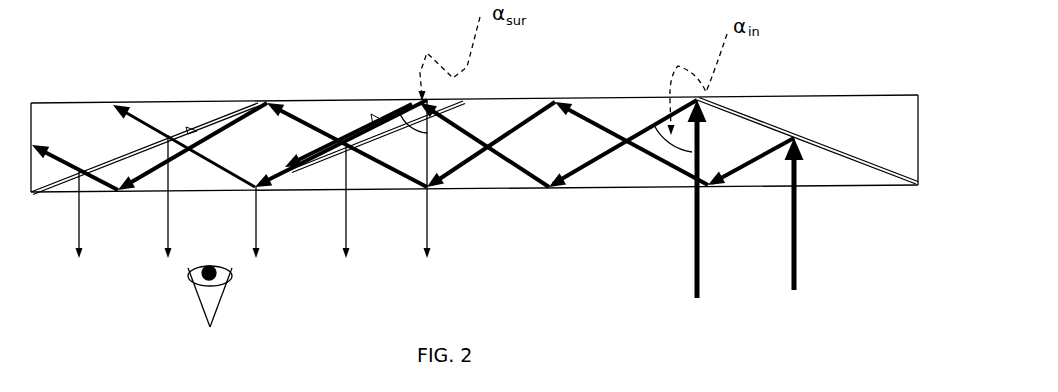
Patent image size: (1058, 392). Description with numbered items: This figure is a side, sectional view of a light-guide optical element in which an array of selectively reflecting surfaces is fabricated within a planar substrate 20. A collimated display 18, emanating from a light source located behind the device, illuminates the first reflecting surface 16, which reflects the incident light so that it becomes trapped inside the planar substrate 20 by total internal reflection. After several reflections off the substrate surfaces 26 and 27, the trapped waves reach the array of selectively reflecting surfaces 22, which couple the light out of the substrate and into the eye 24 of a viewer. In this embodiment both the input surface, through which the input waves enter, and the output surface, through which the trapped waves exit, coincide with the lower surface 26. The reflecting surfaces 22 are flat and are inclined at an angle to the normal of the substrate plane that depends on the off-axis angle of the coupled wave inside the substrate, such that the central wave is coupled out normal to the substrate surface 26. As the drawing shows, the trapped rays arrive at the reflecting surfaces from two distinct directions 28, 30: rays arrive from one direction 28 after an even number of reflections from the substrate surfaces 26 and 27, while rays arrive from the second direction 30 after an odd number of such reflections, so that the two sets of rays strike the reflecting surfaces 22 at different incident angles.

The first reflecting surface 16 is at (860, 143).
The collimated display 18 is at (746, 199).
The planar substrate 20 is at (807, 98).
The selectively reflecting surfaces 22 is at (366, 114).
The eye 24 is at (221, 297).
The lower surface 26 is at (493, 197).
The substrate surface 27 is at (153, 97).
The first direction 28 is at (549, 97).
The second direction 30 is at (668, 178).